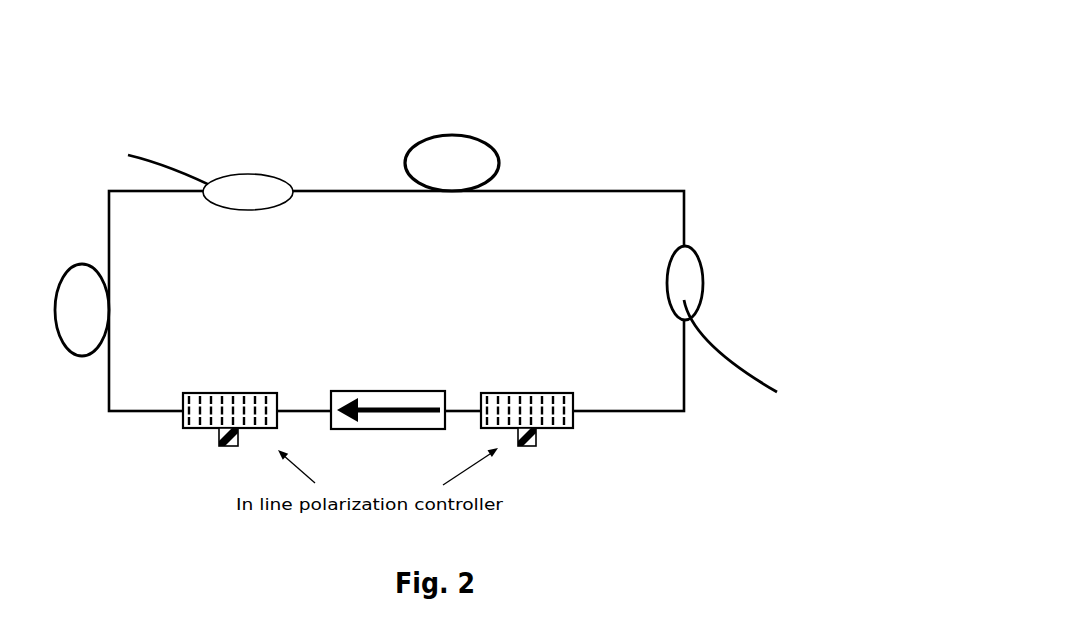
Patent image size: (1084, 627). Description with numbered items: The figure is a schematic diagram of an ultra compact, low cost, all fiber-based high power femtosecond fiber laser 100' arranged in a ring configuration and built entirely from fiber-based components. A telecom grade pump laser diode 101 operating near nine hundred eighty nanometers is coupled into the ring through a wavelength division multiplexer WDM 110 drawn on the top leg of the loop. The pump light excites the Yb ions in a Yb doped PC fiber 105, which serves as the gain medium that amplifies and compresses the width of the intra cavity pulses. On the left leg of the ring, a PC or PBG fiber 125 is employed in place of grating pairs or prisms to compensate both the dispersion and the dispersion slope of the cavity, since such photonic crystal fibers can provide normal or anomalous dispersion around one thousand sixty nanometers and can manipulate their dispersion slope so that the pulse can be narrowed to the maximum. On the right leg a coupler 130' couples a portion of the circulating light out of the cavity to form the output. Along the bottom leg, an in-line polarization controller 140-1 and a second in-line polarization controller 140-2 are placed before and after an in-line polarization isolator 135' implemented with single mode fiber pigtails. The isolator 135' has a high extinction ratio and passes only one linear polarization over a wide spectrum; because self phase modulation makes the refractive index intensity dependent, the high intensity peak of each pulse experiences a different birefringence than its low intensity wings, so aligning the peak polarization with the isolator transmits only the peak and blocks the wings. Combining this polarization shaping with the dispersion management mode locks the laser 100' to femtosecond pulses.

The all fiber-based laser 100' is at (687, 94).
The pump laser diode 101 is at (153, 165).
The Yb doped fiber 105 is at (462, 194).
The 980/1550 WDM 110 is at (233, 189).
The photonic crystal fiber 125 is at (110, 312).
The coupler 130' is at (745, 325).
The in-line polarization sensitive isolator 135' is at (406, 368).
The in-line polarization controller 140-1 is at (210, 400).
The in-line polarization controller 140-2 is at (533, 400).